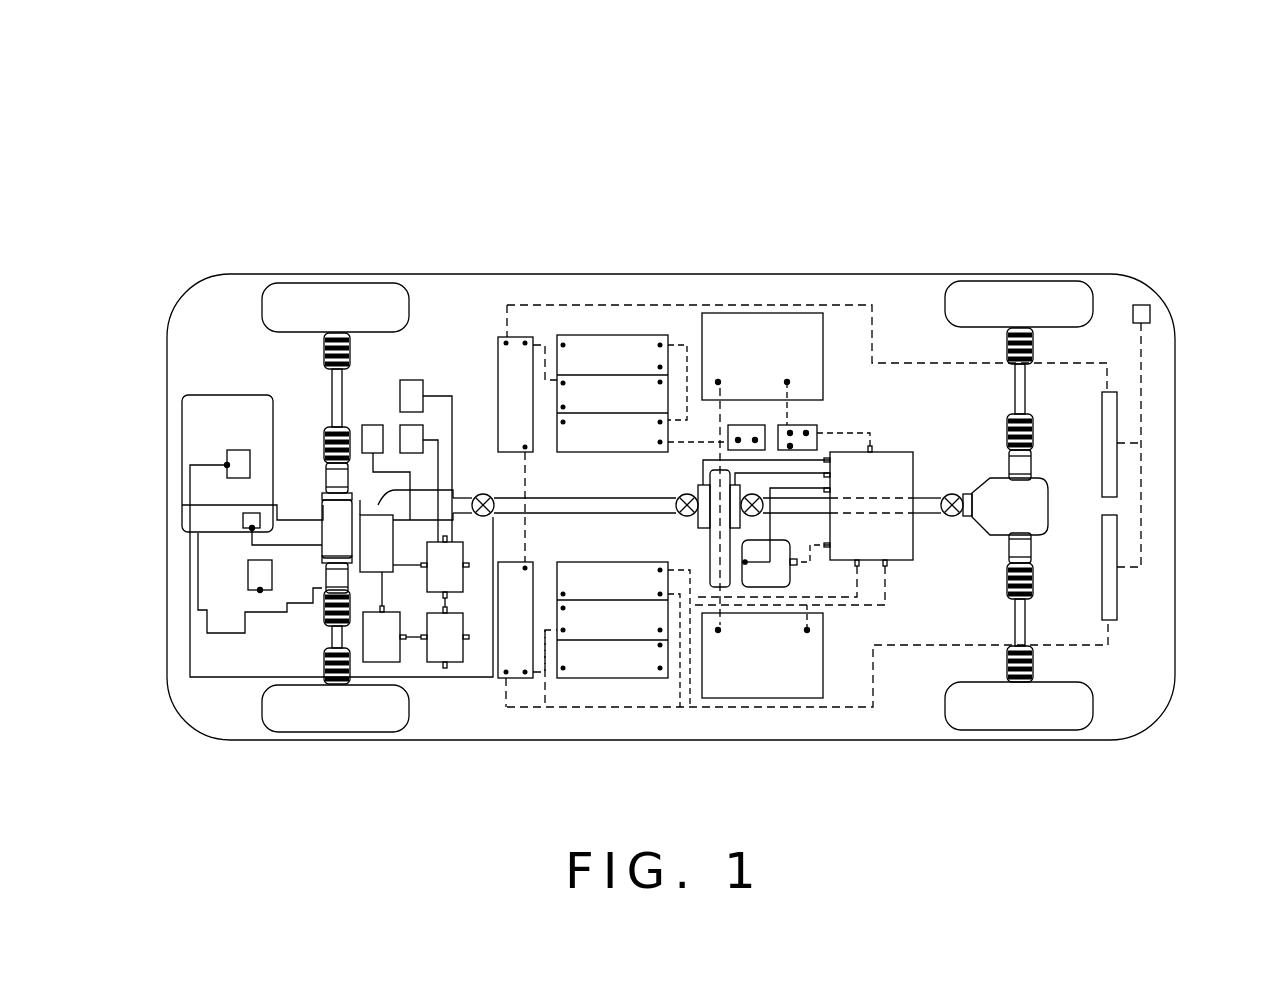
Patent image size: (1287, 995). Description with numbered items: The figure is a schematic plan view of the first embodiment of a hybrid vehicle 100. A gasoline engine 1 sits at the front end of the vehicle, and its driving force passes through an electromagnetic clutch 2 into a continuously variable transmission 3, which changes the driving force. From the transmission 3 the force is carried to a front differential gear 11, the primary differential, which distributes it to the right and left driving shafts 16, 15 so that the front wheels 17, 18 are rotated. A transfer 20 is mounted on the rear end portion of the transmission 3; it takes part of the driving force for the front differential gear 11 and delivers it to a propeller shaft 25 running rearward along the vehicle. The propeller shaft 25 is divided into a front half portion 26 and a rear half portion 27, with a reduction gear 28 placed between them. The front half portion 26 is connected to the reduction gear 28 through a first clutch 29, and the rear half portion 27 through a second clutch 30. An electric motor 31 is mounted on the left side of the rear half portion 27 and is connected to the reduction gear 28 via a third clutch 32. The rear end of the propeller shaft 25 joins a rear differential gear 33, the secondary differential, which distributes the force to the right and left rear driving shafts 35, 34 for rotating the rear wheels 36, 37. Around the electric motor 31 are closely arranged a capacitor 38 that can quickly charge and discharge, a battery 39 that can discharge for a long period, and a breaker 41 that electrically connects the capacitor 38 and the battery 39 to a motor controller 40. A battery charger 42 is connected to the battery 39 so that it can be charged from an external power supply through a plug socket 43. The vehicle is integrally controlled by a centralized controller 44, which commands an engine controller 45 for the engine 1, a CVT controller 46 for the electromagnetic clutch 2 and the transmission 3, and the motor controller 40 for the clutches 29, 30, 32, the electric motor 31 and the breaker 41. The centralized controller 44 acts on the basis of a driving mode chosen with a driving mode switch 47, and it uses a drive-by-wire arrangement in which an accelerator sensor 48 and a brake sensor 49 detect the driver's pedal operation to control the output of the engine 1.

The hybrid vehicle 100 is at (1165, 177).
The gasoline engine 1 is at (195, 423).
The electromagnetic clutch 2 is at (200, 520).
The continuously variable transmission 3 is at (208, 593).
The front differential gear 11 is at (322, 500).
The left driving shaft 15 is at (327, 630).
The right driving shaft 16 is at (330, 382).
The front wheel 17 is at (290, 718).
The front wheel 18 is at (289, 294).
The transfer 20 is at (401, 580).
The propeller shaft 25 is at (483, 492).
The front half portion 26 is at (580, 511).
The rear half portion 27 is at (934, 510).
The reduction gear 28 is at (709, 590).
The first clutch 29 is at (686, 493).
The second clutch 30 is at (748, 493).
The electric motor 31 is at (812, 597).
The third clutch 32 is at (773, 586).
The rear differential gear 33 is at (986, 502).
The left rear driving shaft 34 is at (1023, 607).
The right rear driving shaft 35 is at (1024, 393).
The rear wheel 36 is at (1003, 715).
The rear wheel 37 is at (988, 296).
The capacitor 38 is at (788, 327).
The battery 39 is at (590, 332).
The motor controller 40 is at (891, 452).
The breaker 41 is at (758, 433).
The battery charger 42 is at (1110, 468).
The plug socket 43 is at (1150, 312).
The centralized controller 44 is at (457, 580).
The engine controller 45 is at (452, 657).
The CVT controller 46 is at (384, 657).
The driving mode switch 47 is at (410, 425).
The accelerator sensor 48 is at (410, 380).
The brake sensor 49 is at (373, 425).